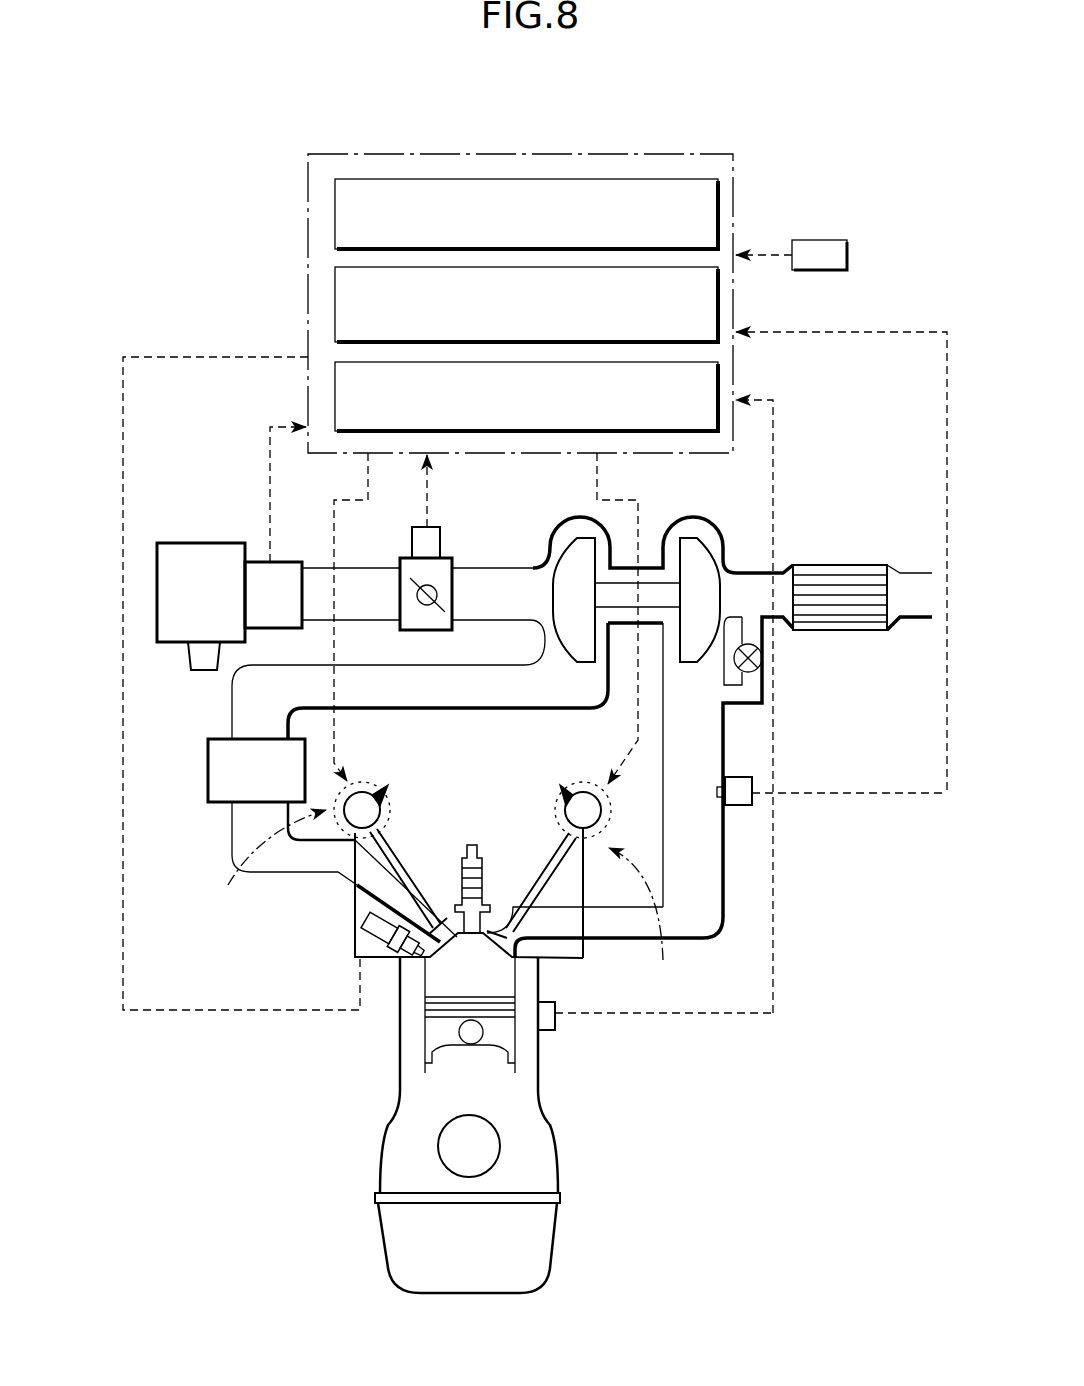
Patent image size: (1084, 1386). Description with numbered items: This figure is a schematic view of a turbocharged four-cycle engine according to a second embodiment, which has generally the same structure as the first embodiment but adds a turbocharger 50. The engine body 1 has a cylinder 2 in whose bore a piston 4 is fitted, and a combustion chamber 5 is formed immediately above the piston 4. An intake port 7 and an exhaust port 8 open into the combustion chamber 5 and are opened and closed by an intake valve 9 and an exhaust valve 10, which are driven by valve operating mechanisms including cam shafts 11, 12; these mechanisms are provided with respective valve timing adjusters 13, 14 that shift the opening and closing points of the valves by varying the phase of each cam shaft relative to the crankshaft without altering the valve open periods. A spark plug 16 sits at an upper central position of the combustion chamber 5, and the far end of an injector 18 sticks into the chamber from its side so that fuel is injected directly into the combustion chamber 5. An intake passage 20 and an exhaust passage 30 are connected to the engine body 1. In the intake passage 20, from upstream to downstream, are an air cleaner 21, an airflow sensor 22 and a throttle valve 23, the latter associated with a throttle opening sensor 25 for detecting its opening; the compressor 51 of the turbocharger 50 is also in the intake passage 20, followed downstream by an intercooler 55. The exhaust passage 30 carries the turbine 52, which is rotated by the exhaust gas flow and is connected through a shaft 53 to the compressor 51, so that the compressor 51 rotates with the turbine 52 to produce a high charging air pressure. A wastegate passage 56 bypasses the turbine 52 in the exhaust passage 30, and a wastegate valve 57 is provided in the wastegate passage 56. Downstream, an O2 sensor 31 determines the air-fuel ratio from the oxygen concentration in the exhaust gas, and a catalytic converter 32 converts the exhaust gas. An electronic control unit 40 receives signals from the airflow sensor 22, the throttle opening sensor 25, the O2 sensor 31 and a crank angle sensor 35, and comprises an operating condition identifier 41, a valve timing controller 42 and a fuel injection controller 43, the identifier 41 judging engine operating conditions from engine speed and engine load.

The engine body 1 is at (562, 1237).
The cylinder 2 is at (424, 1040).
The piston 4 is at (502, 1030).
The combustion chamber 5 is at (492, 977).
The intake port 7 is at (443, 916).
The exhaust port 8 is at (492, 920).
The intake valve 9 is at (405, 870).
The exhaust valve 10 is at (552, 853).
The cam shaft 11 is at (367, 810).
The cam shaft 12 is at (590, 792).
The valve timing adjuster 13 is at (268, 868).
The valve timing adjuster 14 is at (644, 921).
The spark plug 16 is at (472, 845).
The injector 18 is at (355, 917).
The intake passage 20 is at (232, 712).
The air cleaner 21 is at (200, 543).
The airflow sensor 22 is at (290, 562).
The throttle valve 23 is at (432, 582).
The throttle opening sensor 25 is at (412, 545).
The exhaust passage 30 is at (740, 880).
The O2 sensor 31 is at (752, 805).
The catalytic converter 32 is at (867, 620).
The crank angle sensor 35 is at (820, 240).
The electronic control unit 40 is at (398, 146).
The operating condition identifier 41 is at (606, 178).
The valve timing controller 42 is at (335, 325).
The fuel injection controller 43 is at (335, 408).
The turbocharger 50 is at (690, 528).
The compressor 51 is at (572, 553).
The turbine 52 is at (707, 560).
The shaft 53 is at (625, 582).
The intercooler 55 is at (208, 772).
The wastegate passage 56 is at (745, 705).
The wastegate valve 57 is at (763, 658).